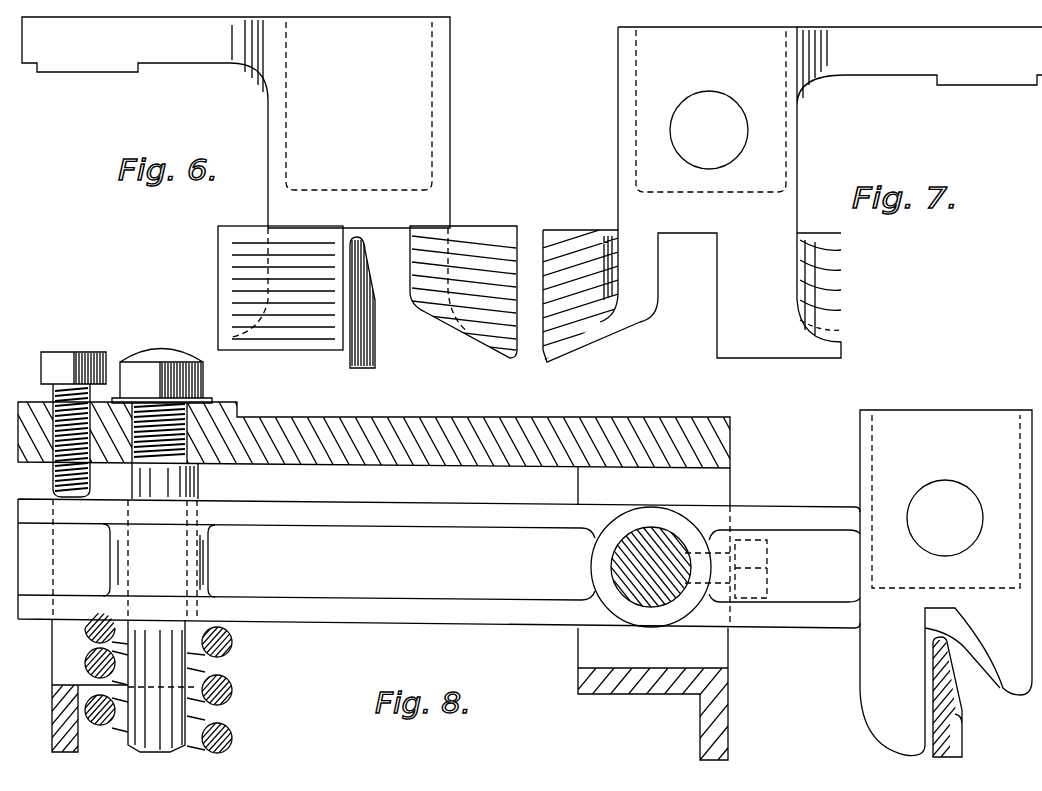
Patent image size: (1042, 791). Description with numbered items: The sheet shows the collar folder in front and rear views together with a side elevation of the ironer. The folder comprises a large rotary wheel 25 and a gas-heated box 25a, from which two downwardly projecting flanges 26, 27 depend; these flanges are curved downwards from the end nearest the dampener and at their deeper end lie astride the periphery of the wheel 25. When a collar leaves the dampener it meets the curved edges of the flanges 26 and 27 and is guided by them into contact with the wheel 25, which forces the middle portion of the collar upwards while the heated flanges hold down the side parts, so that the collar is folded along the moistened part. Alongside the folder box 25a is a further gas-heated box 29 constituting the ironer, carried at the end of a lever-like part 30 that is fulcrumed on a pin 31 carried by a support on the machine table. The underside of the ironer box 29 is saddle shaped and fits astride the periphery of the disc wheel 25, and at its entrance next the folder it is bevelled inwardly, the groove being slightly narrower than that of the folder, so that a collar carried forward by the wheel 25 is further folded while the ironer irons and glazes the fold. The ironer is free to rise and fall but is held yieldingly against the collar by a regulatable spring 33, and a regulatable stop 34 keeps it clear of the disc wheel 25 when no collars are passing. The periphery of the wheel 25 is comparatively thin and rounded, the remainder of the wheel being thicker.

In FIG. 6, the gas-heated box 25a is at (236, 122).
In FIG. 7, the gas-heated box 25a is at (792, 194).
In FIG. 6, the flange 26 is at (240, 289).
In FIG. 7, the flange 26 is at (843, 334).
In FIG. 6, the rotary wheel 25 is at (378, 352).
In FIG. 8, the rotary wheel 25 is at (966, 731).
In FIG. 6, the flange 27 is at (486, 343).
In FIG. 7, the flange 27 is at (624, 322).
In FIG. 8, the gas-heated box 29 is at (975, 410).
In FIG. 8, the lever-like part 30 is at (808, 492).
In FIG. 8, the pin 31 is at (647, 567).
In FIG. 8, the regulatable spring 33 is at (233, 697).
In FIG. 8, the regulatable stop 34 is at (108, 480).